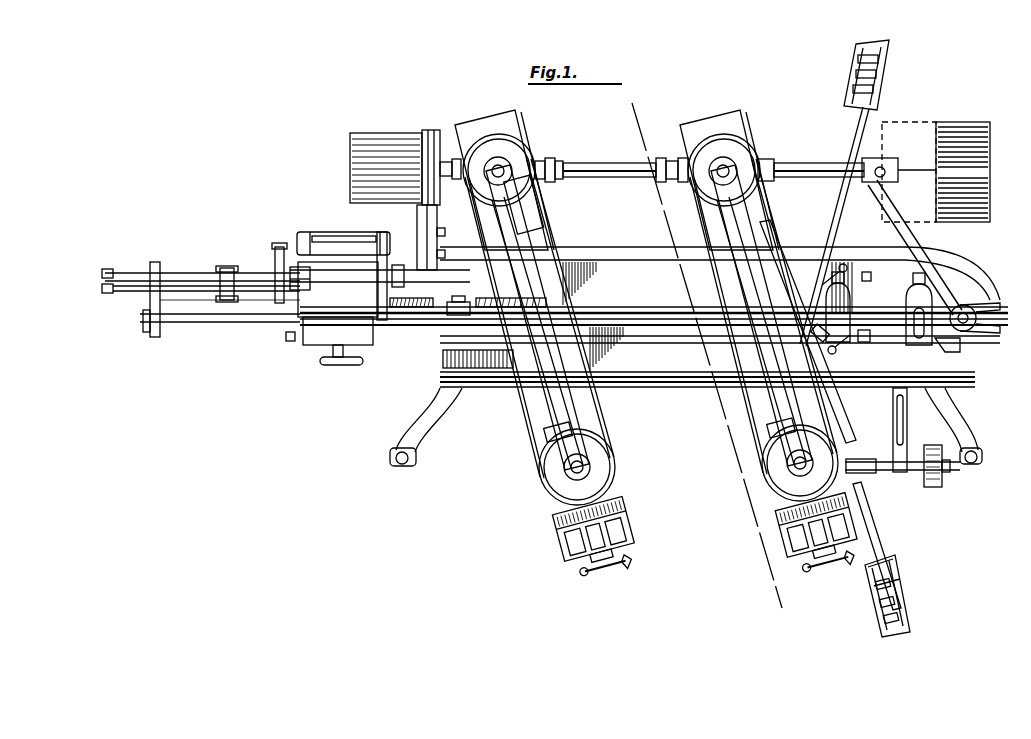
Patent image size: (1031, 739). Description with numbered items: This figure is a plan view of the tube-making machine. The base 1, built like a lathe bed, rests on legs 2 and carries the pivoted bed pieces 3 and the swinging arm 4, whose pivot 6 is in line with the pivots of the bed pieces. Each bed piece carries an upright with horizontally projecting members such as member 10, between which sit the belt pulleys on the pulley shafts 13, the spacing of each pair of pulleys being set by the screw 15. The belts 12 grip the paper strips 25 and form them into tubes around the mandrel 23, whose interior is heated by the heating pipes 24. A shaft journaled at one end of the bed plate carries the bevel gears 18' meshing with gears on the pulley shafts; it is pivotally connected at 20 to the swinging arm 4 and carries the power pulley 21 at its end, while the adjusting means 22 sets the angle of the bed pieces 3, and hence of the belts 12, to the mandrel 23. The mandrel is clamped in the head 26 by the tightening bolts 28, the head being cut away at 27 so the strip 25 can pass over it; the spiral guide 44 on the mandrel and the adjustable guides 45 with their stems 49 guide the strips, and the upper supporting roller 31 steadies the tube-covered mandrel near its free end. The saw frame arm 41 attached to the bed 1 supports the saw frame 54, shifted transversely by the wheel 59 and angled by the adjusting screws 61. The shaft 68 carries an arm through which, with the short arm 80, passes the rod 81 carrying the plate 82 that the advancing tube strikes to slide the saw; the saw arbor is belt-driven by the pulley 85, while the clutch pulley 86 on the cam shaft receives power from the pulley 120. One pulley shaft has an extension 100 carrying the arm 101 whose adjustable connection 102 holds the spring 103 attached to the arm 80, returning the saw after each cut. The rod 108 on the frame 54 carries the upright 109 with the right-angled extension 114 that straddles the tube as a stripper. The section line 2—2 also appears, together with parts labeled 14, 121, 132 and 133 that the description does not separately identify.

The base 1 is at (662, 384).
The legs 2 is at (598, 100).
The bed pieces 3 is at (528, 398).
The swinging arm 4 is at (560, 515).
The pivot of the arm 6 is at (982, 318).
The horizontally projecting member 10 is at (545, 438).
The belts 12 is at (545, 408).
The pulley shafts 13 is at (570, 467).
The drive shaft 14 is at (617, 163).
The screw 15 is at (620, 521).
The bevel gears 18' is at (615, 173).
The pivotal connection 20 is at (890, 161).
The power pulley 21 is at (936, 172).
The adjusting means 22 is at (950, 468).
The mandrel 23 is at (654, 328).
The heating pipes 24 is at (955, 338).
The paper strips 25 is at (834, 205).
The head 26 is at (834, 342).
The cut away portion 27 is at (852, 300).
The tightening bolts 28 is at (848, 268).
The upper supporting roller 31 is at (440, 400).
The saw frame arm 41 is at (400, 320).
The spiral guide 44 is at (273, 277).
The adjustable guides 45 is at (812, 255).
The stem 49 is at (234, 286).
The saw frame 54 is at (338, 331).
The wheel 59 is at (340, 365).
The adjusting screws 61 is at (289, 341).
The shaft 68 is at (210, 271).
The short arm 80 is at (370, 292).
The rod 81 is at (195, 325).
The plate 82 is at (143, 322).
The pulley 85 is at (430, 330).
The clutch pulley 86 is at (438, 232).
The extension 100 is at (503, 165).
The arm 101 is at (535, 250).
The adjustable connection 102 is at (560, 301).
The spring 103 is at (442, 274).
The rod 108 is at (178, 291).
The upright 109 is at (151, 262).
The right angled extension 114 is at (153, 338).
The pulley 120 is at (371, 132).
The rack 121 is at (905, 626).
The rack rail 132 is at (896, 568).
The rack rail 133 is at (900, 590).